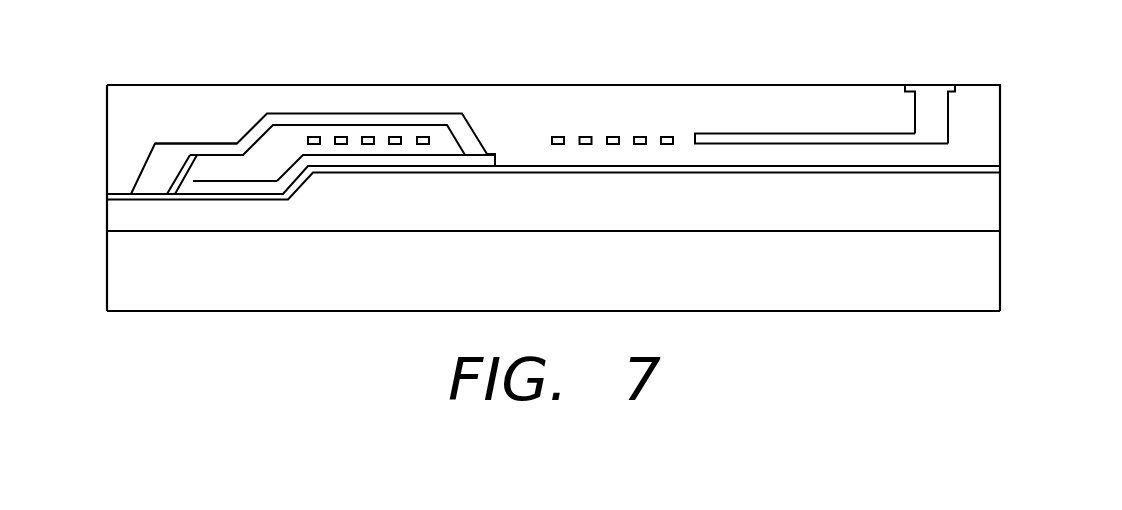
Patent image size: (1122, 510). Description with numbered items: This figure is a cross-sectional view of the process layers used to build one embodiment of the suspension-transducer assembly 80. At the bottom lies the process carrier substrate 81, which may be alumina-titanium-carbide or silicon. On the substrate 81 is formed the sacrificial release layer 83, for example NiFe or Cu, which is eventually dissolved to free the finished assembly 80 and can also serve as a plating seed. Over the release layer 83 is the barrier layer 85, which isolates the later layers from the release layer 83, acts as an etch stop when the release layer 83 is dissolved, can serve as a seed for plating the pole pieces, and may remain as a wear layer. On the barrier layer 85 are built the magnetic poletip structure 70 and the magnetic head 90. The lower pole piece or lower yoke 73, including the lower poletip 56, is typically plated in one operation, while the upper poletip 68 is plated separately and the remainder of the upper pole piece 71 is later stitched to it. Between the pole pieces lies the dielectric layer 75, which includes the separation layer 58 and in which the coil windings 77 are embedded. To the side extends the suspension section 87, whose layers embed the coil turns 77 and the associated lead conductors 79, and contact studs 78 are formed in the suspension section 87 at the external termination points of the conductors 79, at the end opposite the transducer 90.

The lower poletip 56 is at (200, 185).
The separation layer 58 is at (225, 164).
The upper poletip 68 is at (158, 164).
The magnetic poletip structure 70 is at (242, 108).
The upper pole piece 71 is at (320, 120).
The lower pole piece 73 is at (337, 158).
The dielectric layer 75 is at (283, 137).
The coil windings 77 is at (367, 134).
The contact studs 78 is at (932, 98).
The lead conductors 79 is at (769, 133).
The suspension-transducer assembly 80 is at (840, 62).
The process carrier substrate 81 is at (1001, 267).
The release layer 83 is at (1001, 203).
The barrier layer 85 is at (1001, 165).
The suspension section 87 is at (667, 85).
The magnetic head 90 is at (414, 94).